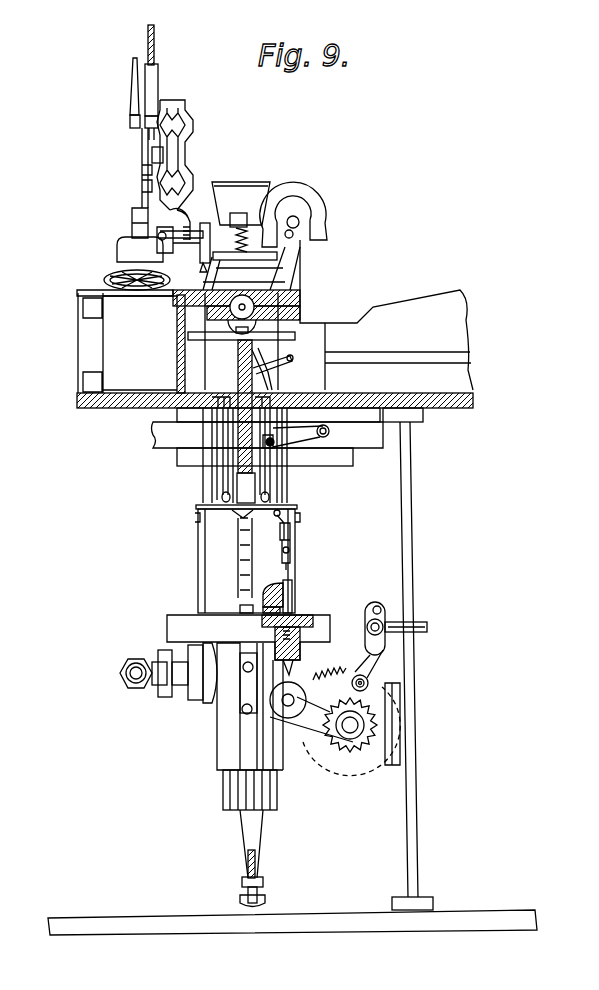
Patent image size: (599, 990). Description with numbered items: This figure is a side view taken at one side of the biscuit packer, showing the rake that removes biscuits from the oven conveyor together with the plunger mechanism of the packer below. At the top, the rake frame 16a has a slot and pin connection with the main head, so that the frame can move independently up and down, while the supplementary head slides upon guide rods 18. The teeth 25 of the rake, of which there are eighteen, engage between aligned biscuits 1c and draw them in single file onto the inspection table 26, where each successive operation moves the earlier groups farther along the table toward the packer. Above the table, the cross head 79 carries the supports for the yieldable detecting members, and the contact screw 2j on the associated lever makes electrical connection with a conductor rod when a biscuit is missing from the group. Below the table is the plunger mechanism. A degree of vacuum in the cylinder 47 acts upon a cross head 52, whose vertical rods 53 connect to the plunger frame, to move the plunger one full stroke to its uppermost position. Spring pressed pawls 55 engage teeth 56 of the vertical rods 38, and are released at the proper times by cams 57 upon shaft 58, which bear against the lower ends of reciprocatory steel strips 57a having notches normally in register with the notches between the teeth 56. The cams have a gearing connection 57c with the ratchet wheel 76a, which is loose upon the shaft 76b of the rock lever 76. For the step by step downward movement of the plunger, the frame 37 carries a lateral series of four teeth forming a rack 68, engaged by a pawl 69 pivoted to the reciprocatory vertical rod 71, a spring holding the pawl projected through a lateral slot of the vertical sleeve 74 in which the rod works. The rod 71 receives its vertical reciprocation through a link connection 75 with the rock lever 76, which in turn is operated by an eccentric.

The guide rods 18 is at (172, 125).
The contact screw 2j is at (190, 228).
The cross head 79 is at (233, 200).
The rake frame 16a is at (147, 193).
The teeth 25 is at (132, 257).
The biscuits 1c is at (113, 270).
The inspection table 26 is at (117, 296).
The reciprocatory vertical rod 71 is at (240, 368).
The vertical sleeve 74 is at (237, 482).
The teeth 56 is at (290, 483).
The vertical rods 38 is at (294, 503).
The frame 37 is at (198, 523).
The pawl 69 is at (236, 512).
The rack 68 is at (247, 557).
The spring pressed pawls 55 is at (295, 527).
The reciprocatory steel strips 57a is at (296, 587).
The gearing connection 57c is at (330, 673).
The cams 57 is at (297, 687).
The rock lever 76 is at (375, 660).
The link connection 75 is at (247, 693).
The shaft 58 is at (290, 700).
The cylinder 47 is at (228, 750).
The shaft 76b is at (333, 747).
The ratchet wheel 76a is at (348, 747).
The vertical rods 53 is at (270, 846).
The cross head 52 is at (232, 883).